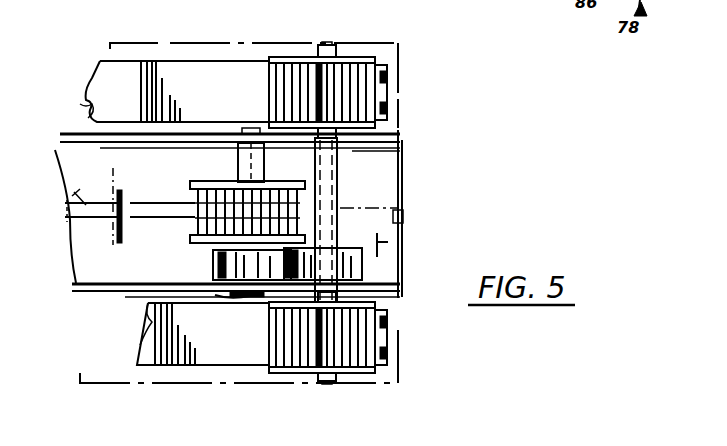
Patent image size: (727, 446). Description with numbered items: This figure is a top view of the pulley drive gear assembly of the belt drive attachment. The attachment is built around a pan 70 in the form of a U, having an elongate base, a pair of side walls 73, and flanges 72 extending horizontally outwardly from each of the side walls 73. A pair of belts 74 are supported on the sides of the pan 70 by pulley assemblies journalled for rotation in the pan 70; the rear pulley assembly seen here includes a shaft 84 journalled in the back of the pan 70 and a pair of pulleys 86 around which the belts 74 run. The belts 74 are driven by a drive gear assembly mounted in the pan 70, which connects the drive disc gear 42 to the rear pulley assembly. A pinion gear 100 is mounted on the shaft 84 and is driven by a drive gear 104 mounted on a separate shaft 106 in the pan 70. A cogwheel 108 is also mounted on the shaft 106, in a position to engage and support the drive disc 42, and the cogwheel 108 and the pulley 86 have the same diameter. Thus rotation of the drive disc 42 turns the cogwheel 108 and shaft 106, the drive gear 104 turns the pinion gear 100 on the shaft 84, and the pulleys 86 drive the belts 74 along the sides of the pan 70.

The drive disc gear 42 is at (58, 193).
The pan 70 is at (377, 243).
The flanges 72 is at (160, 12).
The side walls 73 is at (97, 130).
The belts 74 is at (386, 90).
The shaft 84 is at (340, 173).
The pulleys 86 is at (352, 75).
The pinion gear 100 is at (364, 264).
The drive gear 104 is at (214, 265).
The shaft 106 is at (240, 160).
The cogwheel 108 is at (196, 200).